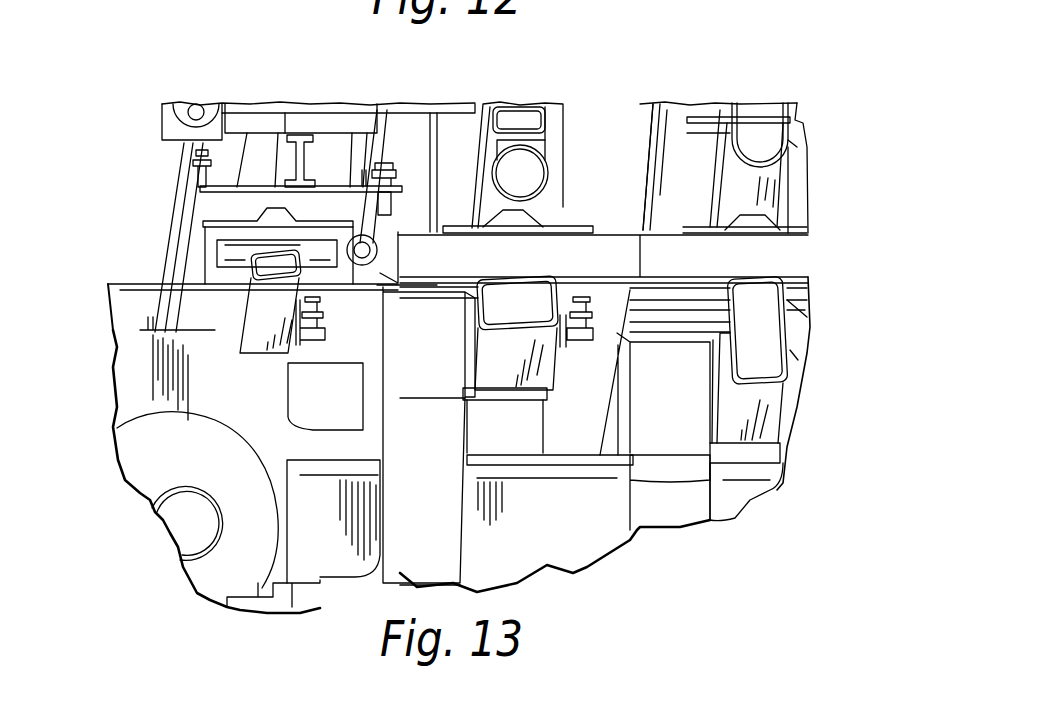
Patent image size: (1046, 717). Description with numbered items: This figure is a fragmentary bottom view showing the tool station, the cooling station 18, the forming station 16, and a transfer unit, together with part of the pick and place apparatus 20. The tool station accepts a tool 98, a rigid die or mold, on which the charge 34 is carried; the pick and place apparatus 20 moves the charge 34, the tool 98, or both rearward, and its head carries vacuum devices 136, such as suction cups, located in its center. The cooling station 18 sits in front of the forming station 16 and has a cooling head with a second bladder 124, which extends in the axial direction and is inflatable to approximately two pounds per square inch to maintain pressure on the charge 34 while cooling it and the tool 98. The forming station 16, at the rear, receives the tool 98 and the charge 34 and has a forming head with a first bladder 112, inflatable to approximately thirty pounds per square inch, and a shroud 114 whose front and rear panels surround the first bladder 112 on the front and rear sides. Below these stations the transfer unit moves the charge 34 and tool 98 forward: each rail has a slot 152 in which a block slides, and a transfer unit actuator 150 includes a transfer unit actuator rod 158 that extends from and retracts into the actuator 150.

The forming station 16 is at (158, 252).
The cooling station 18 is at (548, 86).
The pick and place apparatus 20 is at (262, 90).
The charge 34 is at (207, 193).
The tool 98 is at (207, 233).
The first bladder 112 is at (806, 145).
The shroud 114 is at (658, 125).
The second bladder 124 is at (552, 168).
The vacuum devices 136 is at (307, 163).
The transfer unit actuator 150 is at (313, 348).
The slot 152 is at (222, 289).
The transfer unit actuator rod 158 is at (322, 302).